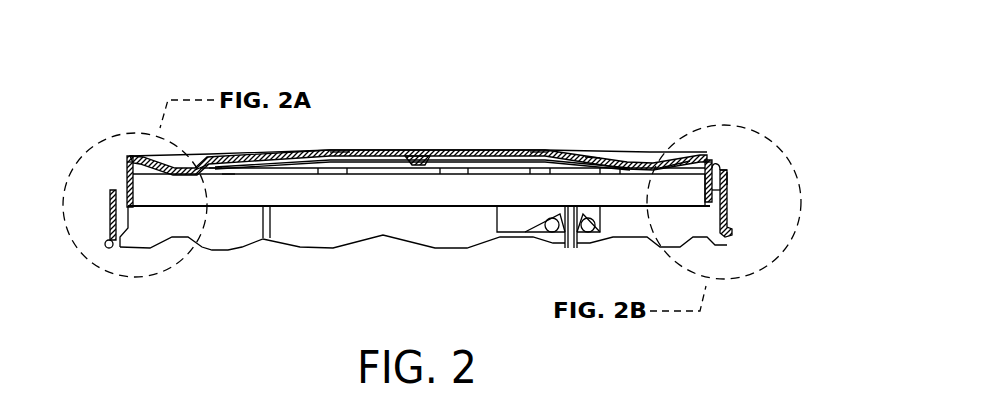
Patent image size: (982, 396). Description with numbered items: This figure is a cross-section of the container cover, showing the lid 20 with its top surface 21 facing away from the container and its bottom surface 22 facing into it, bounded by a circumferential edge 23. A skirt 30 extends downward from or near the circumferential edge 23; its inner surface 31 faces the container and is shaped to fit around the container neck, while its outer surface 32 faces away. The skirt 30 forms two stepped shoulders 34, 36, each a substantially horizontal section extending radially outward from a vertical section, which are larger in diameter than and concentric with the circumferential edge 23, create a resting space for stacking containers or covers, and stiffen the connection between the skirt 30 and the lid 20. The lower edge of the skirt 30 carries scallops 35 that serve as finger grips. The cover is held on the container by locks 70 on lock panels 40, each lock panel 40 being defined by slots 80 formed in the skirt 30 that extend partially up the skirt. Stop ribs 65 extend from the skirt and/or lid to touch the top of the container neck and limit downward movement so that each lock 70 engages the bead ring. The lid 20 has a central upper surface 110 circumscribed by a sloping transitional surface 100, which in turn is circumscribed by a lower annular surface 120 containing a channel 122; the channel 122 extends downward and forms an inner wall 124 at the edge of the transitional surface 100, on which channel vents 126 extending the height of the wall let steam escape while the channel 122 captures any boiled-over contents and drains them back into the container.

The lid 20 is at (385, 152).
The top surface 21 is at (541, 152).
The bottom surface 22 is at (228, 173).
The circumferential edge 23 is at (708, 162).
The skirt 30 is at (730, 179).
The inner surface 31 is at (126, 185).
The outer surface 32 is at (109, 230).
The stepped shoulder 34 is at (718, 168).
The scallops 35 is at (380, 236).
The shoulder 36 is at (725, 176).
The lock panel 40 is at (445, 222).
The stop rib 65 is at (727, 192).
The lock 70 is at (558, 232).
The slot 80 is at (580, 232).
The sloping transitional surface 100 is at (596, 157).
The central upper surface 110 is at (460, 158).
The lower annular surface 120 is at (683, 156).
The channel 122 is at (205, 164).
The inner wall 124 is at (220, 167).
The channel vents 126 is at (345, 150).